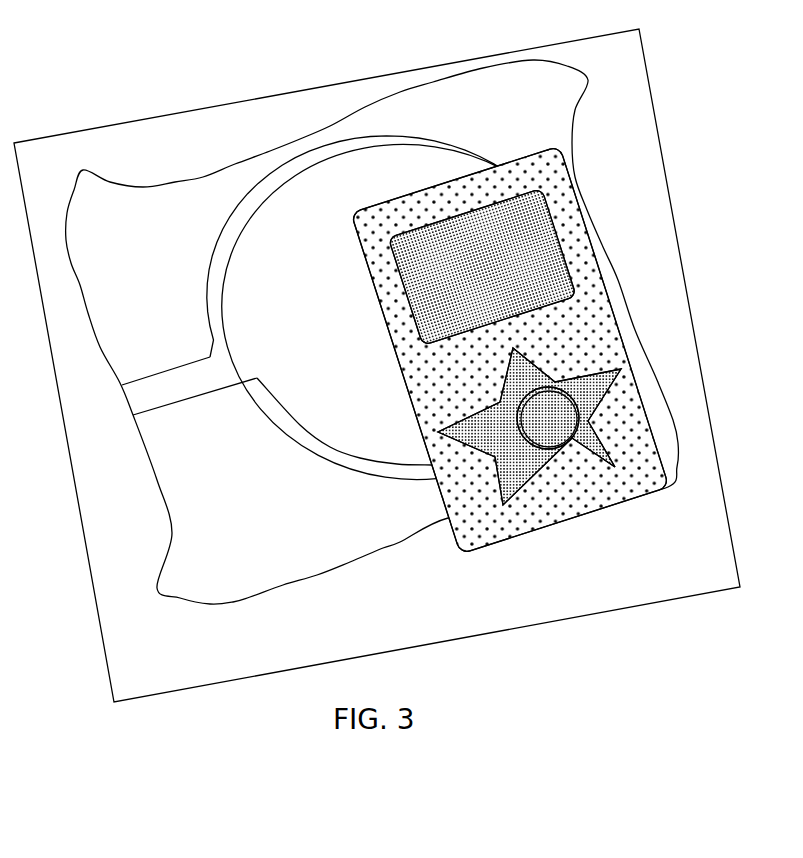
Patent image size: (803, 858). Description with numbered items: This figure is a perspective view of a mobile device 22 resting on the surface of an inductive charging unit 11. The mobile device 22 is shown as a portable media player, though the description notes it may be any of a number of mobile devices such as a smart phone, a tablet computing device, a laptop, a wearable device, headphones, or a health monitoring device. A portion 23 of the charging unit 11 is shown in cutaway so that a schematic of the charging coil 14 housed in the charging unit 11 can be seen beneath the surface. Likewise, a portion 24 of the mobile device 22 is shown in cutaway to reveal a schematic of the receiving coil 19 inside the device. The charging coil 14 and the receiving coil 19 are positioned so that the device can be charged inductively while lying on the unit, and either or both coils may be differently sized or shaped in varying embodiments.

The charging unit 11 is at (425, 66).
The charging coil 14 is at (283, 165).
The receiving coil 19 is at (555, 452).
The mobile device 22 is at (593, 317).
The portion of charging unit 23 is at (331, 135).
The portion of mobile device 24 is at (597, 385).